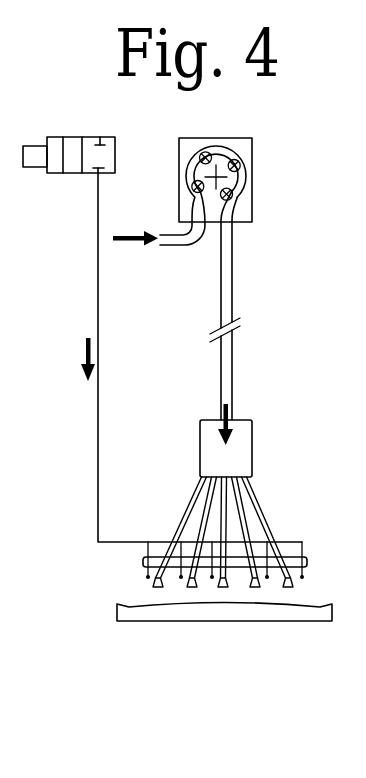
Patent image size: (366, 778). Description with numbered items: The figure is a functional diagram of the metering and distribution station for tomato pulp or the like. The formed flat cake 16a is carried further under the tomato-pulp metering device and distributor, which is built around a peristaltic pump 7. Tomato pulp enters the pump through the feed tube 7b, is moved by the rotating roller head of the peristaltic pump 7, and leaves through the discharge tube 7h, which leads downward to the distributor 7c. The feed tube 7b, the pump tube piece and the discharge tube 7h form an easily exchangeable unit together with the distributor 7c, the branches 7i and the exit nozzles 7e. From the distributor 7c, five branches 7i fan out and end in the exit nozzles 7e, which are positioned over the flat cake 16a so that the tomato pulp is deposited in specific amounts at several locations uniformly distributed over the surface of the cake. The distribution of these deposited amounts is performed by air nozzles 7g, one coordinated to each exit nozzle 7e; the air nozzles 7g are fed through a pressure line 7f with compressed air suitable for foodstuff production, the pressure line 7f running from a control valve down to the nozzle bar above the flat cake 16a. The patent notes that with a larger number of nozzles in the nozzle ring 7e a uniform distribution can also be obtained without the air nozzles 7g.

The peristaltic pump 7 is at (263, 143).
The feed tube 7b is at (231, 237).
The discharge tube 7h is at (227, 298).
The distributor 7c is at (251, 428).
The branches 7i is at (205, 492).
The exit nozzles 7e is at (290, 588).
The air nozzles 7g is at (182, 578).
The pressure line 7f is at (98, 455).
The flat cake 16a is at (212, 612).